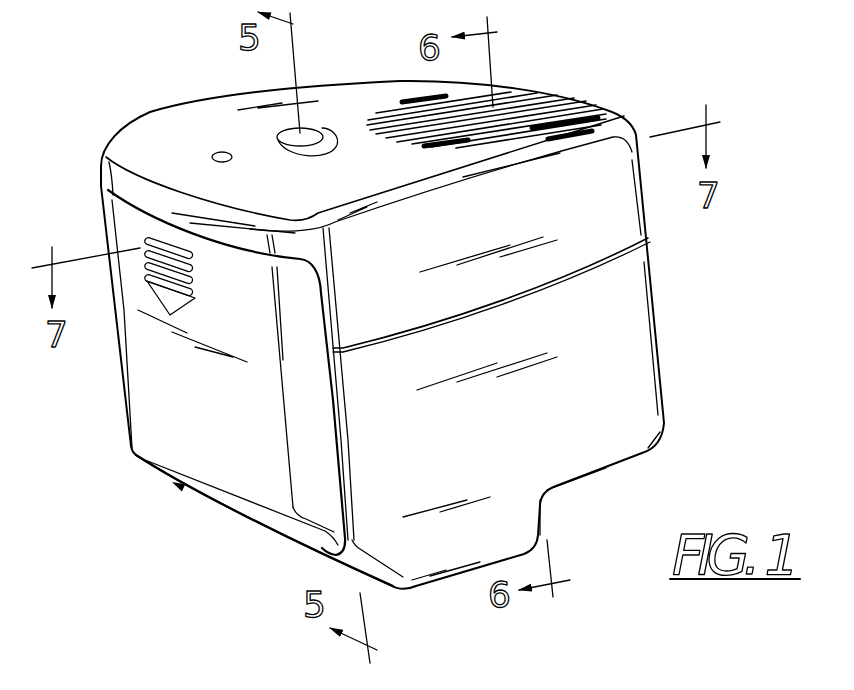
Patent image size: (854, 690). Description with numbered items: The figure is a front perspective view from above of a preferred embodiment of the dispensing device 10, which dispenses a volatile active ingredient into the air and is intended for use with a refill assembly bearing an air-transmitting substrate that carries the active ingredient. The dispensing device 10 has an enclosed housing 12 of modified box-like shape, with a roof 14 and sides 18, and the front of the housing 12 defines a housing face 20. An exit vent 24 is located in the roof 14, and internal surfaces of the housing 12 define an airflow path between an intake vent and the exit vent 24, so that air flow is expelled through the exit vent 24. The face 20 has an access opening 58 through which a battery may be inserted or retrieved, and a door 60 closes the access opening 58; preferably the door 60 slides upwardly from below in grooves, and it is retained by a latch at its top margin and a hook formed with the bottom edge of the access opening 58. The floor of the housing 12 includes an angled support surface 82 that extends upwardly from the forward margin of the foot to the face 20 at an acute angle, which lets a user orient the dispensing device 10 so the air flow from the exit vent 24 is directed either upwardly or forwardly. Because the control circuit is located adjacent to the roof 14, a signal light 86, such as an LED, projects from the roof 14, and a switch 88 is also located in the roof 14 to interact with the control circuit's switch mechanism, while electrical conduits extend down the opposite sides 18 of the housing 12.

The dispensing device 10 is at (682, 362).
The housing 12 is at (590, 297).
The roof 14 is at (333, 110).
The sides 18 is at (590, 423).
The housing face 20 is at (183, 433).
The exit vent 24 is at (540, 107).
The access opening 58 is at (293, 537).
The door 60 is at (167, 384).
The angled support surface 82 is at (233, 498).
The signal light 86 is at (213, 152).
The switch 88 is at (287, 133).